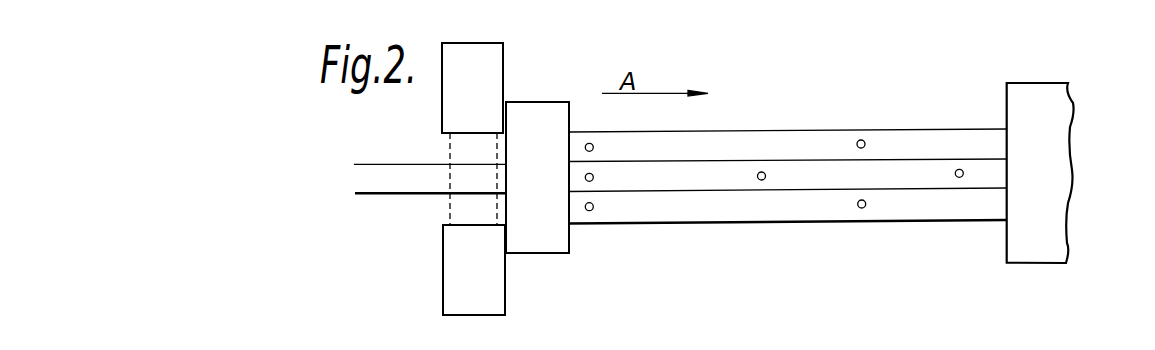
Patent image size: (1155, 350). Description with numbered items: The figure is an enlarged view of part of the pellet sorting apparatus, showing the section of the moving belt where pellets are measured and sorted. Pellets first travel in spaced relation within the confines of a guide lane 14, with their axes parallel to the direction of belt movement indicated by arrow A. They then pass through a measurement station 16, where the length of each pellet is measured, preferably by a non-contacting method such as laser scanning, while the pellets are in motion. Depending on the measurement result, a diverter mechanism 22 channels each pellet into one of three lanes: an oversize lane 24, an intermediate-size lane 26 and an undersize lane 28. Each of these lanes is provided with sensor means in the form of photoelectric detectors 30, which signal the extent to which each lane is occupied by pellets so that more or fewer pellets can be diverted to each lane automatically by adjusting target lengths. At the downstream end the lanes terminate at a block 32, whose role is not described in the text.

The guide lane 14 is at (397, 177).
The measurement station 16 is at (452, 275).
The diverter mechanism 22 is at (538, 118).
The oversize lane 24 is at (730, 140).
The intermediate-size lane 26 is at (707, 177).
The undersize lane 28 is at (738, 210).
The photoelectric detectors 30 is at (593, 203).
The end block 32 is at (1053, 173).